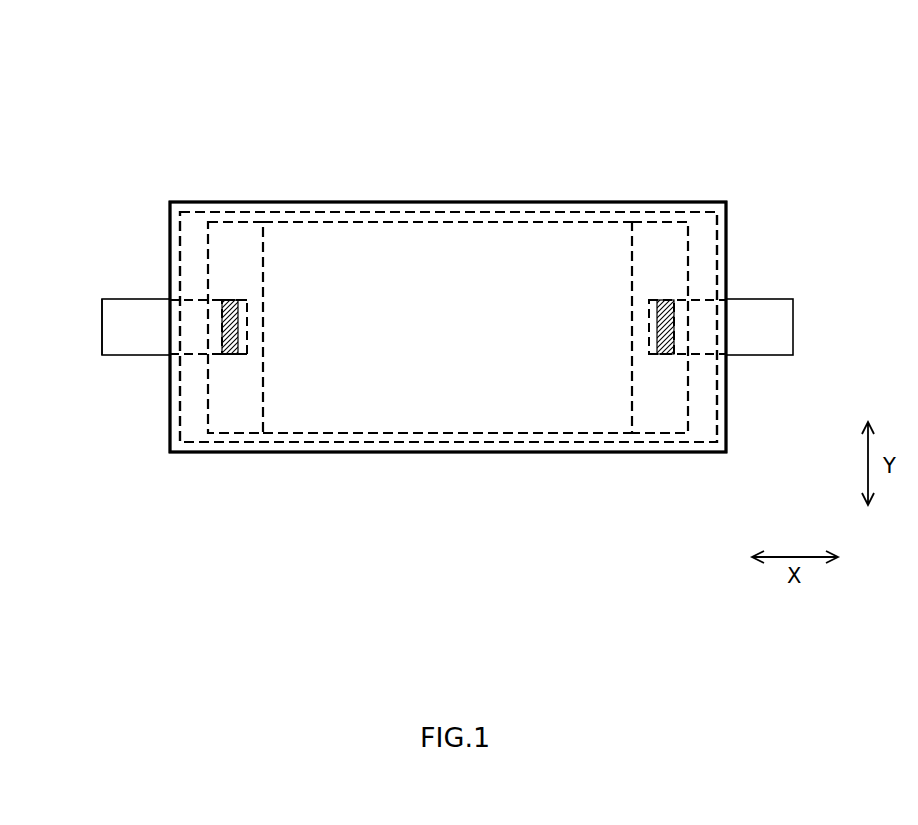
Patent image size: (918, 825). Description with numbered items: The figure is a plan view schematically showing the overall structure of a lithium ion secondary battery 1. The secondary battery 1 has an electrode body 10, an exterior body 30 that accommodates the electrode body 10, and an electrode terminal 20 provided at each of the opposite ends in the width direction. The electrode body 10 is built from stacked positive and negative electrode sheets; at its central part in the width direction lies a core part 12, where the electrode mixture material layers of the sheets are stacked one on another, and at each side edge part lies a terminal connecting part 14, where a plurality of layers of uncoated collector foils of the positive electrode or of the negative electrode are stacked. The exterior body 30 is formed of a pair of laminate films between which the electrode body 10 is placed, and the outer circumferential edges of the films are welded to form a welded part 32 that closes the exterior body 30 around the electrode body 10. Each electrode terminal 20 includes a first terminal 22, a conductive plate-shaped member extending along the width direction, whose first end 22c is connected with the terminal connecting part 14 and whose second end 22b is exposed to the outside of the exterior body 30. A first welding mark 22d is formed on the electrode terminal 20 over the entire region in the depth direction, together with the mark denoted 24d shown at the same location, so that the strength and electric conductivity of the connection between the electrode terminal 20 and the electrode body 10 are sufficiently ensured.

The secondary battery 1 is at (104, 83).
The electrode body 10 is at (530, 258).
The core part 12 is at (447, 413).
The terminal connecting part 14 is at (237, 413).
The electrode terminal 20 is at (457, 295).
The first terminal 22 is at (140, 305).
The second end 22b is at (110, 330).
The first end 22c is at (240, 332).
The first welding mark 22d is at (433, 249).
The electrode portion 24d is at (224, 300).
The exterior body 30 is at (322, 202).
The welded part 32 is at (680, 208).